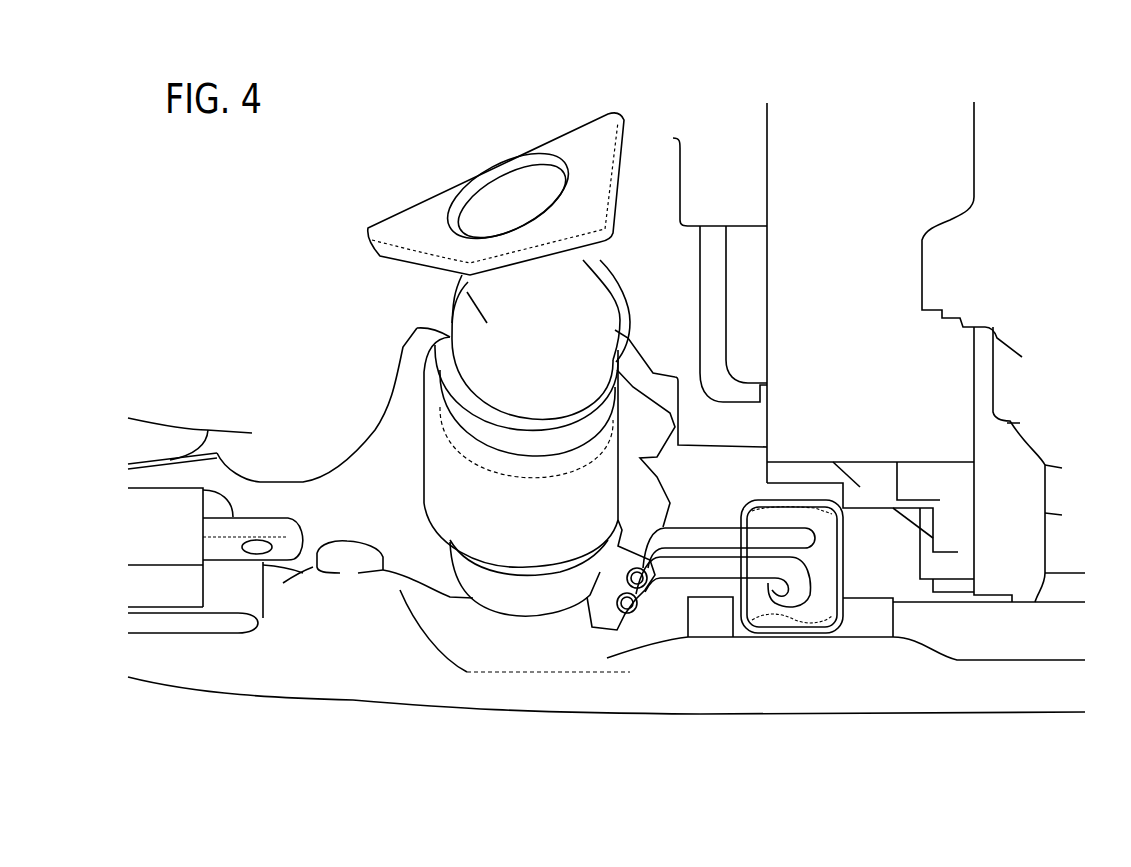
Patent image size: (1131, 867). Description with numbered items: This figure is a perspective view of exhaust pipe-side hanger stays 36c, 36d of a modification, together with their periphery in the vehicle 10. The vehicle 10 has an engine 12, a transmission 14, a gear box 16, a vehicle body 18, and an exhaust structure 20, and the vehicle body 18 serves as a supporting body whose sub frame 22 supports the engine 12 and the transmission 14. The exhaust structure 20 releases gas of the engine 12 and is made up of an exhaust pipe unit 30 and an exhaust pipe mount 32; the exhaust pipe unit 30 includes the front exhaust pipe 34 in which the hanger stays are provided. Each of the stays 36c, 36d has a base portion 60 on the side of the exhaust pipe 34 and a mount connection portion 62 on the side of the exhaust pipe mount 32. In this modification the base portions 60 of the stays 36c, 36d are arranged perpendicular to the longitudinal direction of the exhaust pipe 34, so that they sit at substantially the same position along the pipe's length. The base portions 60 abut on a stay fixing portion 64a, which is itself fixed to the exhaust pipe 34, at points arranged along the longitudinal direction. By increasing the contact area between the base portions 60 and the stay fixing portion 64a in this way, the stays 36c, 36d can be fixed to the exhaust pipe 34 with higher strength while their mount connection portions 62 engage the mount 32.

The vehicle 10 is at (220, 166).
The engine 12 is at (275, 382).
The transmission 14 is at (1012, 386).
The gear box 16 is at (475, 652).
The vehicle body 18 is at (949, 735).
The exhaust structure 20 is at (522, 632).
The sub frame 22 is at (1018, 723).
The exhaust pipe unit 30 is at (440, 473).
The exhaust pipe mount 32 is at (846, 634).
The front exhaust pipe 34 is at (452, 502).
The hanger stay 36c is at (723, 585).
The hanger stay 36d is at (702, 528).
The base portion 60 is at (657, 587).
The mount connection portion 62 is at (802, 582).
The stay fixing portion 64a is at (648, 497).